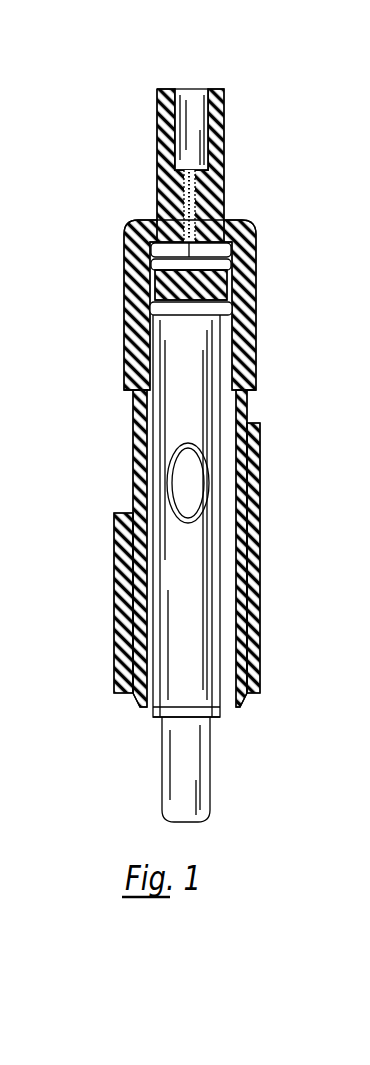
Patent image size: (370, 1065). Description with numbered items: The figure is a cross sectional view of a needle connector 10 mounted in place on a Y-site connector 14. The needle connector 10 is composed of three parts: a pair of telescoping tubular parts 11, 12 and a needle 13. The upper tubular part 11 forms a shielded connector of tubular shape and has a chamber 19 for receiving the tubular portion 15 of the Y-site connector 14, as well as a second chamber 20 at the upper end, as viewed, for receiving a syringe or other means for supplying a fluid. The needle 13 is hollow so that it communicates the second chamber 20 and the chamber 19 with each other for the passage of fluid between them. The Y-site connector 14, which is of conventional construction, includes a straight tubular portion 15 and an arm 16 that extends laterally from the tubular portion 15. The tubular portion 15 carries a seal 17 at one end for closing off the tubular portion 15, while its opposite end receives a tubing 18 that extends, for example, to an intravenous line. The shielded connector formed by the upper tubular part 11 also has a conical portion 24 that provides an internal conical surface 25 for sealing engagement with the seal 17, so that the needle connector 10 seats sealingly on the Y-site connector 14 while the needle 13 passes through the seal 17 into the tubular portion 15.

The needle connector 10 is at (66, 211).
The upper tubular part 11 is at (160, 196).
The tubular part 12 is at (118, 543).
The needle 13 is at (222, 176).
The Y-site connector 14 is at (200, 551).
The tubular portion 15 is at (158, 718).
The arm 16 is at (168, 482).
The seal 17 is at (124, 285).
The tubing 18 is at (210, 780).
The chamber 19 is at (247, 385).
The second chamber 20 is at (199, 93).
The conical portion 24 is at (256, 257).
The internal conical surface 25 is at (247, 298).